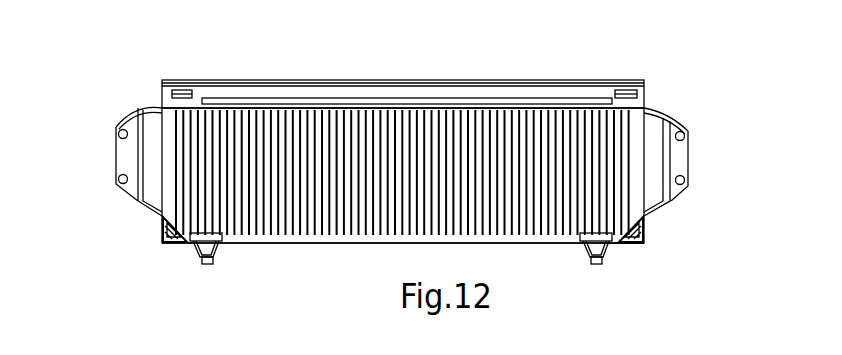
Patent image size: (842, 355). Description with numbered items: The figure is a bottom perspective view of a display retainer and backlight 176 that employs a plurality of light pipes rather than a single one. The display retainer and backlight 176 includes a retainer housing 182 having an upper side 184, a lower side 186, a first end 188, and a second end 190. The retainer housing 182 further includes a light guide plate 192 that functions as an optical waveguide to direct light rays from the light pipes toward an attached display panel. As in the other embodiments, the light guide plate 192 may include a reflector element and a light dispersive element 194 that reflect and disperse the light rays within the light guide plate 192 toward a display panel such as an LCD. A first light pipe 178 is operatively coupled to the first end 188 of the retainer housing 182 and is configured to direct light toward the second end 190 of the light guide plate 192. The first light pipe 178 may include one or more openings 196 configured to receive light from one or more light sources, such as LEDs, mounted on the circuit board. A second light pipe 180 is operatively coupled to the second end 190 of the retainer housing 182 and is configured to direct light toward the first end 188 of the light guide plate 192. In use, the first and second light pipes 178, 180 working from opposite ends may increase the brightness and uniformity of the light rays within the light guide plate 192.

The display retainer and backlight 176 is at (487, 53).
The upper side 184 is at (257, 77).
The light guide plate 192 is at (630, 128).
The light dispersive element 194 is at (392, 205).
The first light pipe 178 is at (93, 163).
The second light pipe 180 is at (702, 158).
The openings 196 is at (105, 173).
The first end 188 is at (152, 221).
The second end 190 is at (650, 230).
The lower side 186 is at (245, 254).
The retainer housing 182 is at (647, 250).